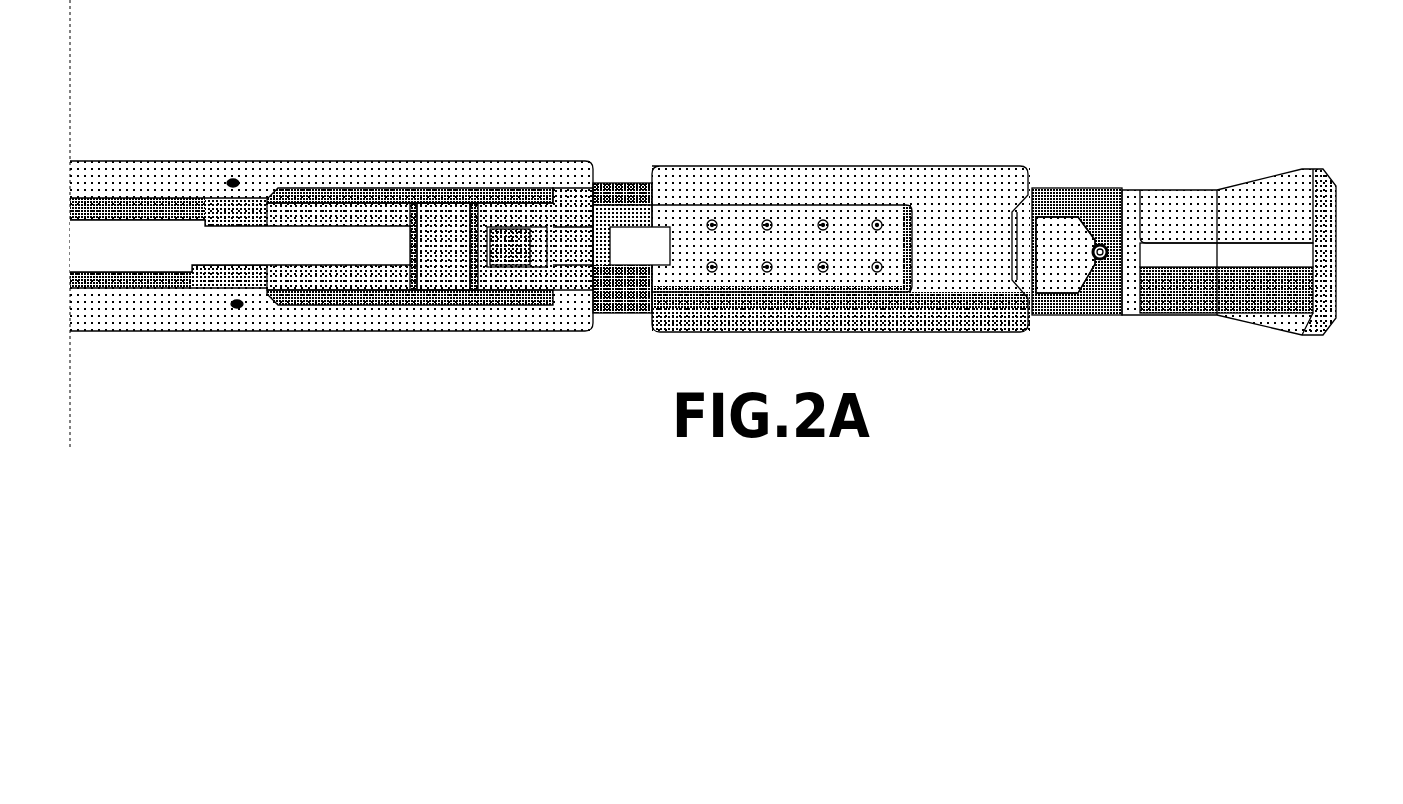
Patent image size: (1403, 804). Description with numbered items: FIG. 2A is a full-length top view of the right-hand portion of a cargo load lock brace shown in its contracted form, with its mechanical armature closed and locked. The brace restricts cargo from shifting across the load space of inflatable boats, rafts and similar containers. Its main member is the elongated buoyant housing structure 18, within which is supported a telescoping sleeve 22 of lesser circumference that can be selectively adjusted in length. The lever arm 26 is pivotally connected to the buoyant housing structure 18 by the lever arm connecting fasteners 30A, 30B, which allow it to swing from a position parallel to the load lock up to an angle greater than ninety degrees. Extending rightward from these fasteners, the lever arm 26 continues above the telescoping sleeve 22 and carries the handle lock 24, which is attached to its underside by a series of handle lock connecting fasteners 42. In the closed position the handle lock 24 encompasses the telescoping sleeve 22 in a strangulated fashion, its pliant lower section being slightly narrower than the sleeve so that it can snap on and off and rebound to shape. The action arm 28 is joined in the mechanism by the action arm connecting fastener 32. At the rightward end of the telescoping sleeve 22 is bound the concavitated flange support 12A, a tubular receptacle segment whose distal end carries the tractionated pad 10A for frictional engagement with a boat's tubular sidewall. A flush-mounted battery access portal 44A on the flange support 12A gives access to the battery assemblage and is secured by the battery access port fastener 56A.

The tractionated pad 10A is at (729, 249).
The concavitated flange support 12A is at (1197, 225).
The buoyant housing structure 18 is at (122, 178).
The telescoping sleeve 22 is at (612, 183).
The handle lock 24 is at (841, 187).
The lever arm 26 is at (342, 217).
The action arm 28 is at (330, 245).
The lever arm connecting fastener 30A is at (239, 308).
The lever arm connecting fastener 30B is at (237, 180).
The action arm connecting fastener 32 is at (452, 190).
The handle lock connecting fasteners 42 is at (881, 221).
The battery access portal 44A is at (1124, 203).
The battery access port fastener 56A is at (1104, 246).